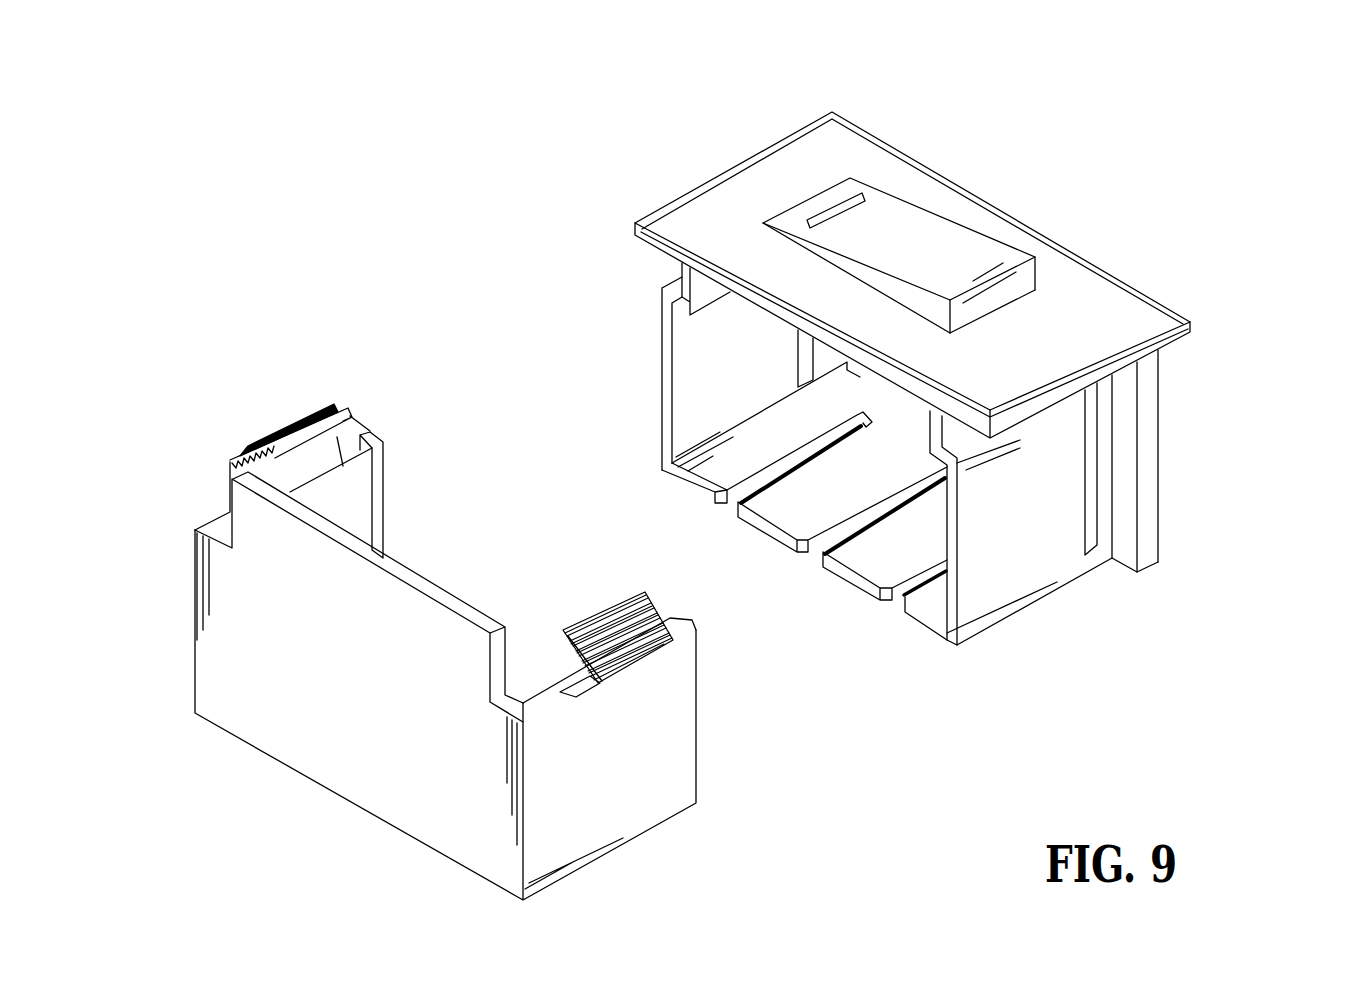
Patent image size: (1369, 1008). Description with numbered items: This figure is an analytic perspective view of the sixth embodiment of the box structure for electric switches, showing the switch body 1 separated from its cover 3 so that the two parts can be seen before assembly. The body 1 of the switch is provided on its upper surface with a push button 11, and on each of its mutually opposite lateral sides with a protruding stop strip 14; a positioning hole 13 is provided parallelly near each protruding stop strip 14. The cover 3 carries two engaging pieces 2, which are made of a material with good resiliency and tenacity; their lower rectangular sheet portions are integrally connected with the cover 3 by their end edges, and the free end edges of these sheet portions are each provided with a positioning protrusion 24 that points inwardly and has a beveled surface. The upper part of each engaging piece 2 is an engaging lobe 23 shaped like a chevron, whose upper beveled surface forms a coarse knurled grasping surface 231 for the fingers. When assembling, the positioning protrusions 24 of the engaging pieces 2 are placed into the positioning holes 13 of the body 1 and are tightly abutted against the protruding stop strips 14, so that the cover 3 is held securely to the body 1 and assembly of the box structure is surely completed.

The body 1 is at (985, 341).
The push button 11 is at (918, 222).
The positioning hole 13 is at (1092, 486).
The protruding stop strip 14 is at (1155, 425).
The engaging piece 2 is at (700, 633).
The engaging lobe 23 is at (578, 692).
The coarse knurled grasping surface 231 is at (607, 603).
The positioning protrusion 24 is at (383, 487).
The cover 3 is at (455, 652).